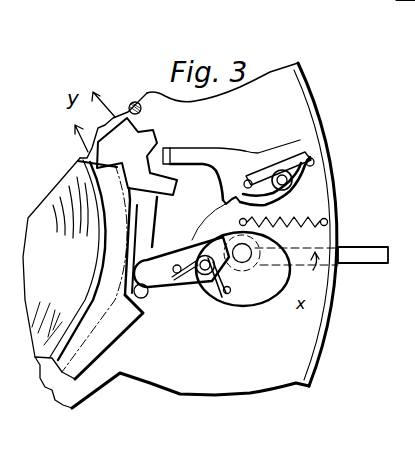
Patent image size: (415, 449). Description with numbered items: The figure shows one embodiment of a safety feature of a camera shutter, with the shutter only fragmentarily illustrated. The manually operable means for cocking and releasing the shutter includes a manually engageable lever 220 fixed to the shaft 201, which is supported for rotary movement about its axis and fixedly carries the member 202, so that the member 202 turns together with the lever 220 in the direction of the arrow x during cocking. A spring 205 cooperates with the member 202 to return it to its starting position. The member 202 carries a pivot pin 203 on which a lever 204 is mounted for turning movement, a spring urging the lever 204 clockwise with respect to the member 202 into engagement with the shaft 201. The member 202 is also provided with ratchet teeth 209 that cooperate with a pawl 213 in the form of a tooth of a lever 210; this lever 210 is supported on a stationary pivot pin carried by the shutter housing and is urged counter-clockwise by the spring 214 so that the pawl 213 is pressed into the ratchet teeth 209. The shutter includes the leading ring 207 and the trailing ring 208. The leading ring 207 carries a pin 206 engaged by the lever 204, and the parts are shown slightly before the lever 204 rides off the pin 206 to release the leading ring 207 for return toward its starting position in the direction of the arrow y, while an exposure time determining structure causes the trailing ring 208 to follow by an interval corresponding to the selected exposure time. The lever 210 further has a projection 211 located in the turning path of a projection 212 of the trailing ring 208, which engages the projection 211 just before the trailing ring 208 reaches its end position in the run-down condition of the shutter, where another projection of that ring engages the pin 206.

The shaft 201 is at (244, 253).
The member 202 is at (259, 303).
The pivot pin 203 is at (225, 280).
The lever 204 is at (185, 289).
The spring 205 is at (327, 220).
The pin 206 is at (145, 298).
The leading ring 207 is at (92, 380).
The trailing ring 208 is at (87, 297).
The ratchet teeth 209 is at (224, 207).
The lever 210 is at (250, 159).
The projection 211 is at (172, 151).
The projection 212 is at (174, 190).
The pawl 213 is at (284, 212).
The spring 214 is at (270, 169).
The manually engageable lever 220 is at (343, 253).